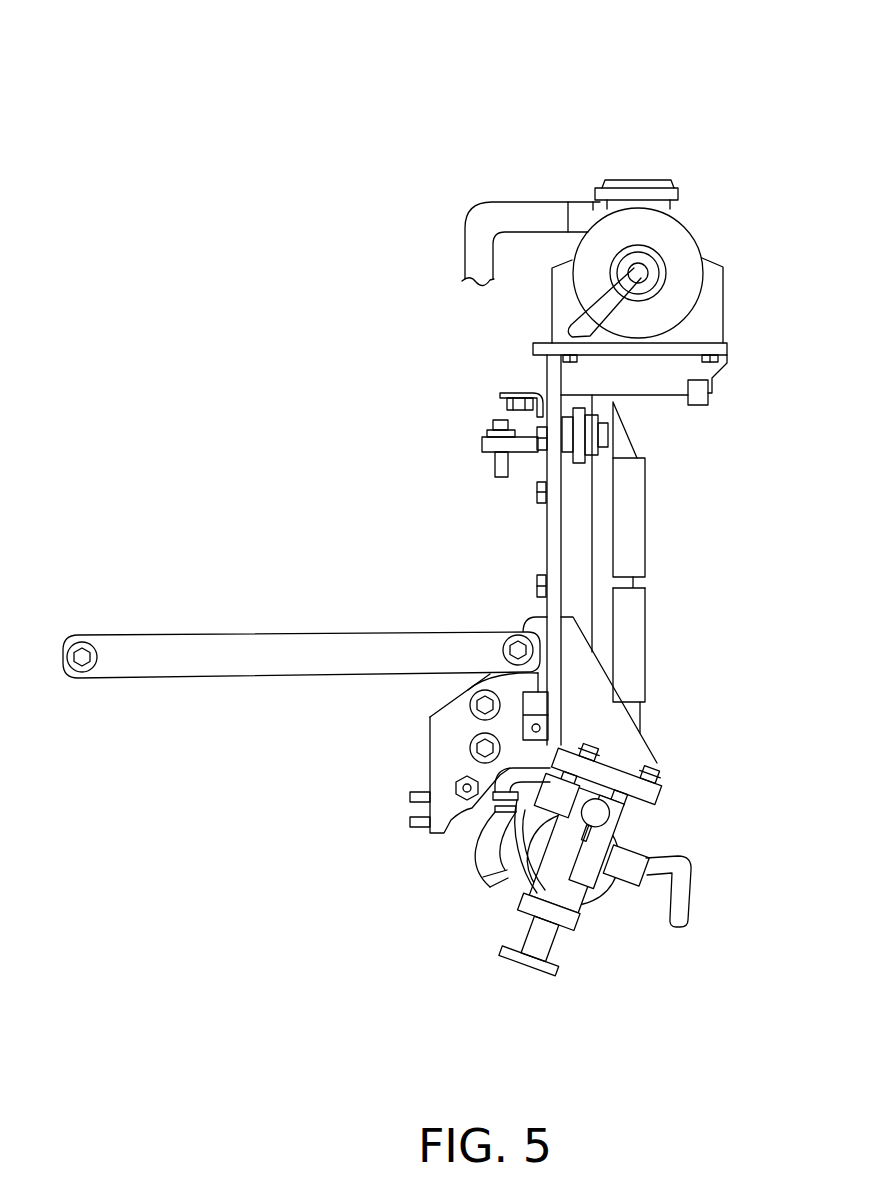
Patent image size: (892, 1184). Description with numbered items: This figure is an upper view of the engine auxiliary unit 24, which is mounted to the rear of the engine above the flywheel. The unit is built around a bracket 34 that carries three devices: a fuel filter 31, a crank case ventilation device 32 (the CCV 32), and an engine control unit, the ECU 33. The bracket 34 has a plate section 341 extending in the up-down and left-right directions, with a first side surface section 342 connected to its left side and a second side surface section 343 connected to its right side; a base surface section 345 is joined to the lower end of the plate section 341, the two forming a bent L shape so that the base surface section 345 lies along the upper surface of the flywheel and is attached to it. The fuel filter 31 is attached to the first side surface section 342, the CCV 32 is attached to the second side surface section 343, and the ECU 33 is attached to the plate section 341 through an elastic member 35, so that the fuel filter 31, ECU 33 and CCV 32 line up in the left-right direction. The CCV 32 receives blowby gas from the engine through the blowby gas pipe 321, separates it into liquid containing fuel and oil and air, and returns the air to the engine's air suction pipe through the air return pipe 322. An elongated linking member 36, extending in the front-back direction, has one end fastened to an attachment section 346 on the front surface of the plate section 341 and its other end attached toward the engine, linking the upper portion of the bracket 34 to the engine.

The engine auxiliary unit 24 is at (527, 130).
The fuel filter 31 is at (597, 890).
The crank case ventilation device 32 is at (687, 255).
The blowby gas pipe 321 is at (553, 316).
The air return pipe 322 is at (480, 216).
The engine control unit 33 is at (630, 477).
The bracket 34 is at (527, 527).
The plate section 341 is at (550, 548).
The first side surface section 342 is at (630, 743).
The second side surface section 343 is at (690, 348).
The base surface section 345 is at (603, 522).
The attachment section 346 is at (472, 688).
The elastic member 35 is at (567, 433).
The linking member 36 is at (183, 650).